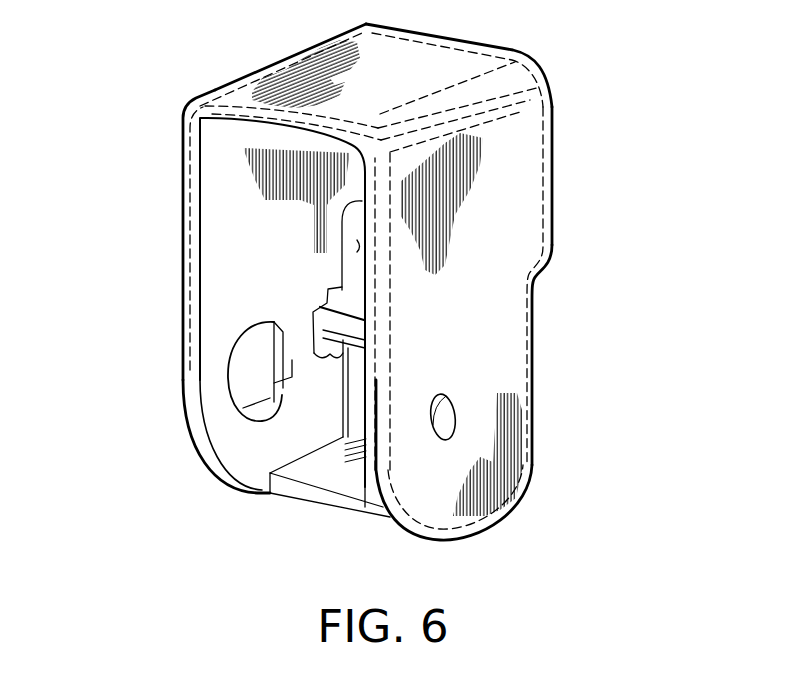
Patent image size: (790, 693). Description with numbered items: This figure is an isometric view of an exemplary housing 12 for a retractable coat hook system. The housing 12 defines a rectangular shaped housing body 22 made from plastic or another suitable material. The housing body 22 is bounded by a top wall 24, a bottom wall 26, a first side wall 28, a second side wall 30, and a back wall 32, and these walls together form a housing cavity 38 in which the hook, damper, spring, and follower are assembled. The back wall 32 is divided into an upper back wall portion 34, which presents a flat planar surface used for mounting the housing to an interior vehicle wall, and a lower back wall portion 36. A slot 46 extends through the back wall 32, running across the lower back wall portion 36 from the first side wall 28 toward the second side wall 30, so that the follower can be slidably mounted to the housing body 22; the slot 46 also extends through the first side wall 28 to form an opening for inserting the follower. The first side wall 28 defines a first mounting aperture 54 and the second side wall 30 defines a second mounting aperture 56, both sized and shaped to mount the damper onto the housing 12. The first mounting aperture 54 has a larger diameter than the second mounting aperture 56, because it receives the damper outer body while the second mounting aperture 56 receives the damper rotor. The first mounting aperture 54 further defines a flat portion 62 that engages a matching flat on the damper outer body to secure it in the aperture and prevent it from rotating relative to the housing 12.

The housing 12 is at (188, 221).
The housing body 22 is at (530, 148).
The top wall 24 is at (277, 65).
The bottom wall 26 is at (345, 496).
The first side wall 28 is at (188, 183).
The second side wall 30 is at (473, 460).
The back wall 32 is at (533, 373).
The upper back wall portion 34 is at (549, 195).
The lower back wall portion 36 is at (533, 438).
The housing cavity 38 is at (222, 156).
The slot 46 is at (317, 313).
The first mounting aperture 54 is at (243, 368).
The second mounting aperture 56 is at (438, 432).
The flat portion 62 is at (262, 325).